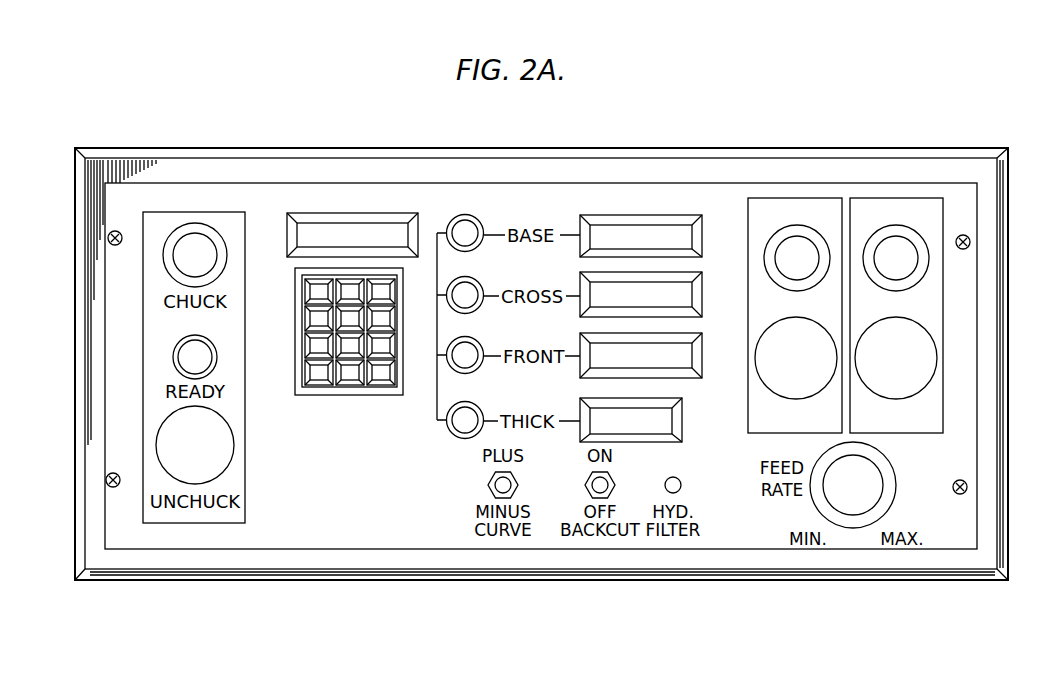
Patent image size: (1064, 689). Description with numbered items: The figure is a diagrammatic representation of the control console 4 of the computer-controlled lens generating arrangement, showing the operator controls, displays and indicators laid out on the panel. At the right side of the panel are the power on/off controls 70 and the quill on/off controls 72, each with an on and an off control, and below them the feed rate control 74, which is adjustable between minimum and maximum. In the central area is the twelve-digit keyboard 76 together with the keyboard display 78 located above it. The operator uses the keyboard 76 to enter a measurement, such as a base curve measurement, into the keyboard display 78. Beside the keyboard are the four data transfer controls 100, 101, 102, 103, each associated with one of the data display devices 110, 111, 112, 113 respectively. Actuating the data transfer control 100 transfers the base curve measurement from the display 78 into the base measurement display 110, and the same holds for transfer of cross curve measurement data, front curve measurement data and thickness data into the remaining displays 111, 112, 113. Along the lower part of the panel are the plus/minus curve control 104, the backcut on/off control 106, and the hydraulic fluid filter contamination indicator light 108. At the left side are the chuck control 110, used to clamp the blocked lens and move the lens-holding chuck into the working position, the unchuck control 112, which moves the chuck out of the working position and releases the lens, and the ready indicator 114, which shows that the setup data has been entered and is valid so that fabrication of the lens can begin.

The control console 4 is at (700, 148).
The power on/off controls 70 is at (933, 236).
The quill on/off controls 72 is at (793, 200).
The feed rate control 74 is at (872, 483).
The 12-digit keyboard 76 is at (333, 396).
The keyboard display 78 is at (363, 222).
The data transfer control 100 is at (479, 220).
The data transfer control 101 is at (480, 282).
The data transfer control 102 is at (481, 342).
The data transfer control 103 is at (481, 407).
The plus/minus curve control 104 is at (490, 478).
The backcut on/off control 106 is at (614, 478).
The hydraulic fluid filter contamination indicator light 108 is at (684, 478).
The chuck control 110 is at (202, 246).
The data display device 111 is at (699, 273).
The unchuck control 112 is at (224, 457).
The data display device 113 is at (668, 415).
The ready indicator 114 is at (206, 360).